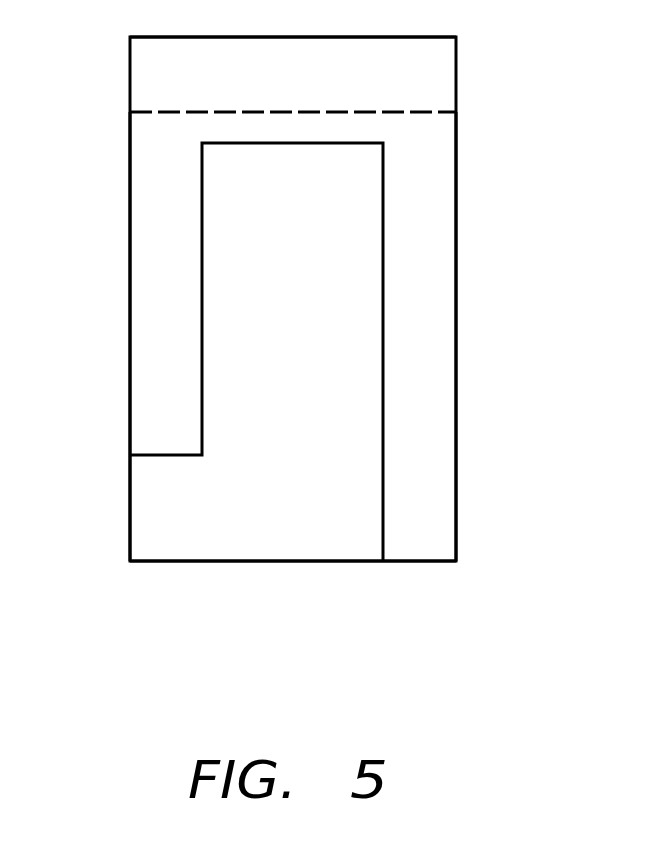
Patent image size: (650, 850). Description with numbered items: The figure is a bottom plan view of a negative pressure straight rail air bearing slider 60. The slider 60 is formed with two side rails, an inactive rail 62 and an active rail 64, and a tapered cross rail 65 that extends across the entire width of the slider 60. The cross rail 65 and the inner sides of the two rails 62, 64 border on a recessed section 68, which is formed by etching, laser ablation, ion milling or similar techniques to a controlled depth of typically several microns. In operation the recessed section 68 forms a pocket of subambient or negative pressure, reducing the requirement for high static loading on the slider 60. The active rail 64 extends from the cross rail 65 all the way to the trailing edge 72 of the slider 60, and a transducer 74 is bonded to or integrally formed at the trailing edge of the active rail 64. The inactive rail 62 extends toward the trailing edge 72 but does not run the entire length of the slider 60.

The slider 60 is at (92, 490).
The inactive rail 62 is at (145, 358).
The active rail 64 is at (438, 360).
The cross rail 65 is at (145, 70).
The recessed section 68 is at (312, 252).
The trailing edge 72 is at (285, 562).
The transducer 74 is at (415, 563).